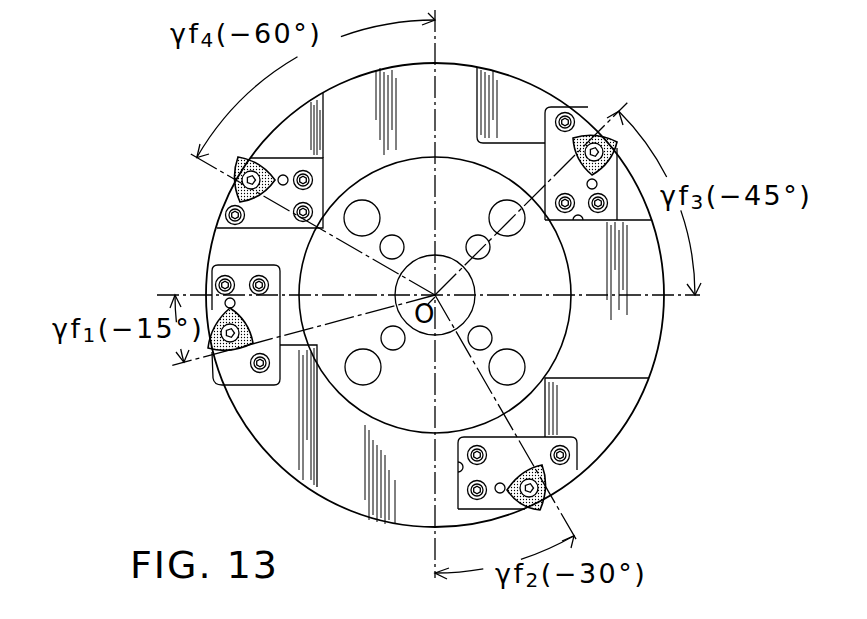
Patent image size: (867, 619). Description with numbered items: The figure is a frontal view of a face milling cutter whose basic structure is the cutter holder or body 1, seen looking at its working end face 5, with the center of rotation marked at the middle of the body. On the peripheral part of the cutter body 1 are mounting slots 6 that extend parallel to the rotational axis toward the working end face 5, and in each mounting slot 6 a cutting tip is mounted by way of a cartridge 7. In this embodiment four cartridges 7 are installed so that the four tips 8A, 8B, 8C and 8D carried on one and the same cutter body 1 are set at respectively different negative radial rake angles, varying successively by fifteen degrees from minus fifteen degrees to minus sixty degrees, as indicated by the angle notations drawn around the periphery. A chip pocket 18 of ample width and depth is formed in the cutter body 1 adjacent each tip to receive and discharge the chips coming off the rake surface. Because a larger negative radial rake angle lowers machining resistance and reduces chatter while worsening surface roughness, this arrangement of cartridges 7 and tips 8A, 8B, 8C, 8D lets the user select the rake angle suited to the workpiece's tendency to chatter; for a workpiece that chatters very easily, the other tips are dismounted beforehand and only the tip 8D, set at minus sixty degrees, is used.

The cutter body 1 is at (470, 65).
The working end face 5 is at (356, 505).
The mounting slot 6 is at (579, 222).
The cartridge 7 is at (318, 173).
The cutting tip 8A is at (215, 352).
The cutting tip 8B is at (548, 508).
The cutting tip 8C is at (593, 136).
The cutting tip 8D is at (236, 190).
The chip pocket 18 is at (520, 93).